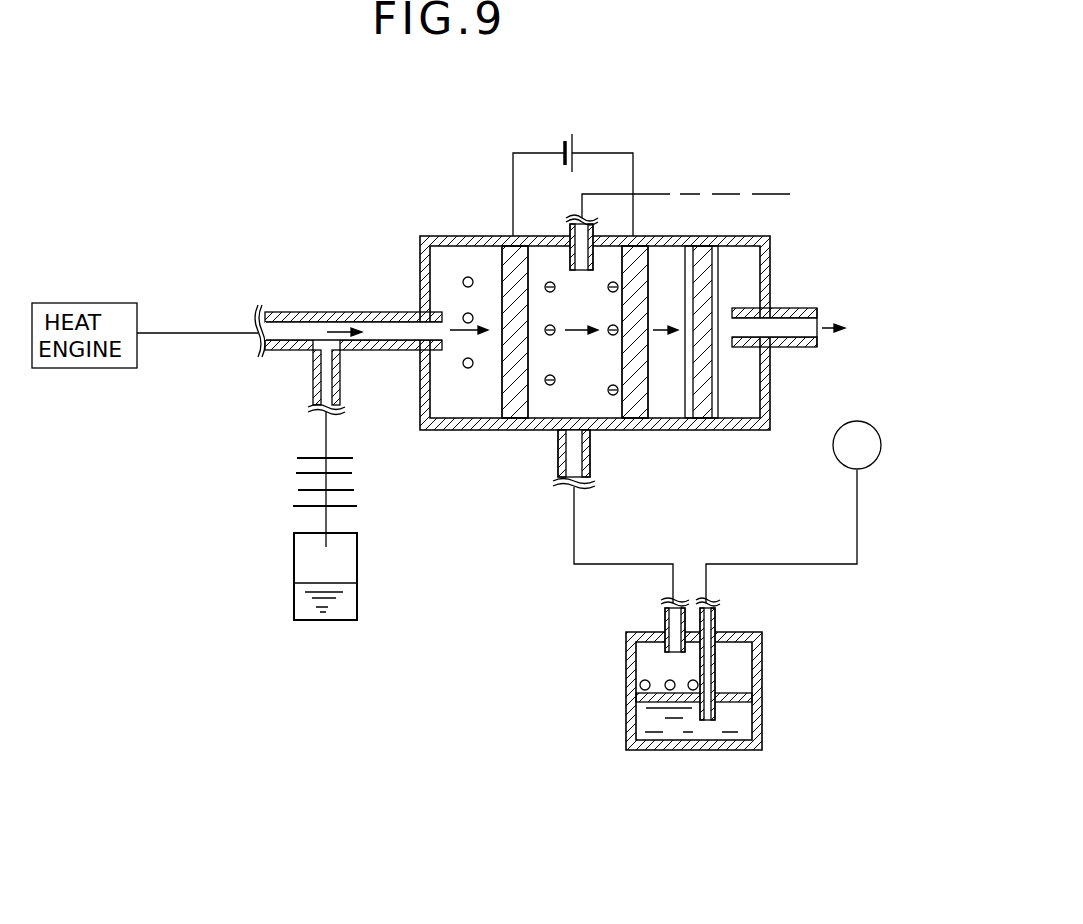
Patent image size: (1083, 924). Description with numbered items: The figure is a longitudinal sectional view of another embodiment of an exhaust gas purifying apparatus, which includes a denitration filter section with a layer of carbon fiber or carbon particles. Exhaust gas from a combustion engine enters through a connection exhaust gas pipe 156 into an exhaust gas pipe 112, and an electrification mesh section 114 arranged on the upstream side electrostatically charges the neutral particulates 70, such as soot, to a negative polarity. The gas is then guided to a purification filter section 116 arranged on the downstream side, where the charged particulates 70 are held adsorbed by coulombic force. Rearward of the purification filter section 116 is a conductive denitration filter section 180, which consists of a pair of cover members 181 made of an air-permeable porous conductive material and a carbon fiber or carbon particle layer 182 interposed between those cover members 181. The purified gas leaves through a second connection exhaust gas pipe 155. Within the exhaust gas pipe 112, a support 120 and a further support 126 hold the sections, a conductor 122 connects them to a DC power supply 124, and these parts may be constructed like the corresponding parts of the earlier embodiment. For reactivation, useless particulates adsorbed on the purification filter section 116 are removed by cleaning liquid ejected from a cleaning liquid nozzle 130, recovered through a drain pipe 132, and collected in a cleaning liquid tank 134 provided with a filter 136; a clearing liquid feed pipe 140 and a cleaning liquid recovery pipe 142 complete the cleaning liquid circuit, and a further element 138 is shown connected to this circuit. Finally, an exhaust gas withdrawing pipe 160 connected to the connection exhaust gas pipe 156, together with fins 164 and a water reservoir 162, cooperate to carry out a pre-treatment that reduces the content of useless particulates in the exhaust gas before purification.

The particulates 70 is at (463, 279).
The exhaust gas pipe 112 is at (428, 431).
The electrification mesh section 114 is at (490, 246).
The purification filter section 116 is at (648, 270).
The support 120 is at (512, 276).
The conductor 122 is at (513, 170).
The DC power supply 124 is at (576, 134).
The support 126 is at (636, 431).
The cleaning liquid nozzle 130 is at (562, 240).
The drain pipe 132 is at (556, 452).
The cleaning liquid tank 134 is at (668, 750).
The filter 136 is at (735, 692).
The indicator 138 is at (868, 470).
The clearing liquid feed pipe 140 is at (866, 312).
The cleaning liquid recovery pipe 142 is at (574, 562).
The connection exhaust gas pipe 155 is at (792, 348).
The connection exhaust gas pipe 156 is at (307, 312).
The exhaust gas withdrawing pipe 160 is at (313, 376).
The water reservoir 162 is at (294, 600).
The fins 164 is at (300, 490).
The denitration filter section 180 is at (776, 327).
The cover members 181 is at (722, 263).
The carbon fiber or carbon particle layer 182 is at (702, 292).